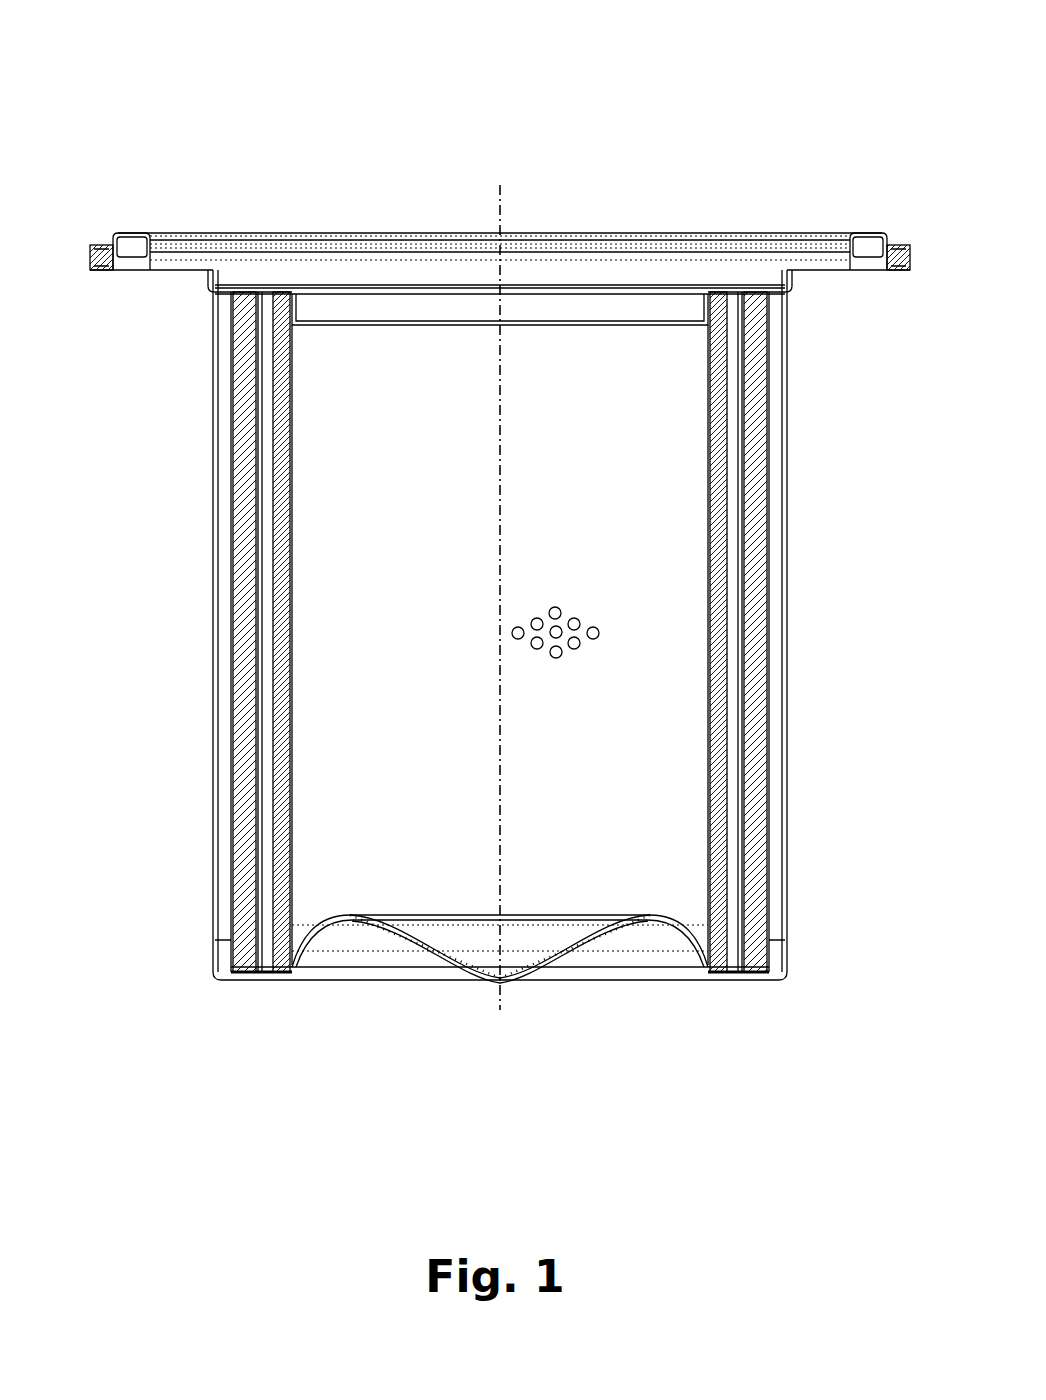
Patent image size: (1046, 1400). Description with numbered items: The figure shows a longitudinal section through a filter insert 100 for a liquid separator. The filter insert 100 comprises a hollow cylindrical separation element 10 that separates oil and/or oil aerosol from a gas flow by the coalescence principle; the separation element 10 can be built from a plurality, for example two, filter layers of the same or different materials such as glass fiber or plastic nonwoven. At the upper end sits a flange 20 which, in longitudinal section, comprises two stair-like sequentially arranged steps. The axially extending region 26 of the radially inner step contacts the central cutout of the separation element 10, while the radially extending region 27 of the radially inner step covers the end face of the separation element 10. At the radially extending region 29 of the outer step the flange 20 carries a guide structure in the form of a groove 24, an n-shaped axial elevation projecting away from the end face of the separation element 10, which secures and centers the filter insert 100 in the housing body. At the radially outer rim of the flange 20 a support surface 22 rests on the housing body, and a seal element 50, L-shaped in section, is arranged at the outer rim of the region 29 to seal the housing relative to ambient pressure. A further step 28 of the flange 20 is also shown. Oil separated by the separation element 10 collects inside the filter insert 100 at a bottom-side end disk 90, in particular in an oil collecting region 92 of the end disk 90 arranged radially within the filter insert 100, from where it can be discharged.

The filter insert 100 is at (695, 63).
The hollow cylindrical separation element 10 is at (288, 716).
The flange 20 is at (530, 321).
The support surface 22 is at (110, 270).
The groove 24 is at (137, 232).
The axially extending region 26 is at (298, 325).
The radially extending region 27 is at (265, 291).
The lid skirt step 28 is at (212, 290).
The radially extending region 29 is at (180, 240).
The seal element 50 is at (92, 268).
The bottom-side end disk 90 is at (657, 944).
The oil collecting region 92 is at (441, 948).